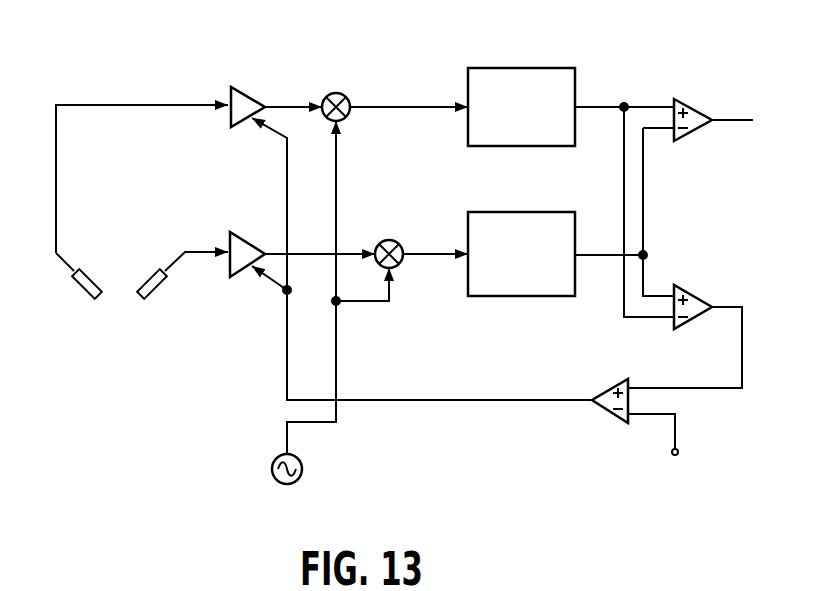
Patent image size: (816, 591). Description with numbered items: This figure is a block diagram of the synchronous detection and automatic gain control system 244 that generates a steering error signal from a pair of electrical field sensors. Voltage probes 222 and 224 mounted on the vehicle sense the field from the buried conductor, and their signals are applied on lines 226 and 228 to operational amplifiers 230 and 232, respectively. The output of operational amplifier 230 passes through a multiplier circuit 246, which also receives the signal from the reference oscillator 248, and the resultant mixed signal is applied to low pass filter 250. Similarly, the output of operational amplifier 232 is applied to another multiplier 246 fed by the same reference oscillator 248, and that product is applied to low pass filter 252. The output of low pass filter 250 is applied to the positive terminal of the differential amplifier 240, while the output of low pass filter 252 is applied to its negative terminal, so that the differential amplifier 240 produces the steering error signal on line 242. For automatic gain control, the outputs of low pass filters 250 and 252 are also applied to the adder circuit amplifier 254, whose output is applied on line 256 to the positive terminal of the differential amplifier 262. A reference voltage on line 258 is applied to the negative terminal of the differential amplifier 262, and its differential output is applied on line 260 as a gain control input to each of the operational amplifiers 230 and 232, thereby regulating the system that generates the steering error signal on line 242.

The voltage probe 222 is at (81, 292).
The voltage probe 224 is at (157, 292).
The output terminal 226 is at (130, 104).
The output terminal 228 is at (193, 251).
The operational amplifier 230 is at (251, 92).
The operational amplifier 232 is at (247, 232).
The differential amplifier 240 is at (697, 100).
The line 242 is at (733, 118).
The synchronous detection and automatic gain control system 244 is at (197, 398).
The multiplier circuit 246 is at (342, 92).
The reference oscillator 248 is at (302, 467).
The low pass filter 250 is at (564, 67).
The low pass filter 252 is at (540, 297).
The adder circuit amplifier 254 is at (704, 287).
The line 256 is at (716, 392).
The line 258 is at (678, 455).
The line 260 is at (477, 399).
The differential amplifier 262 is at (602, 412).